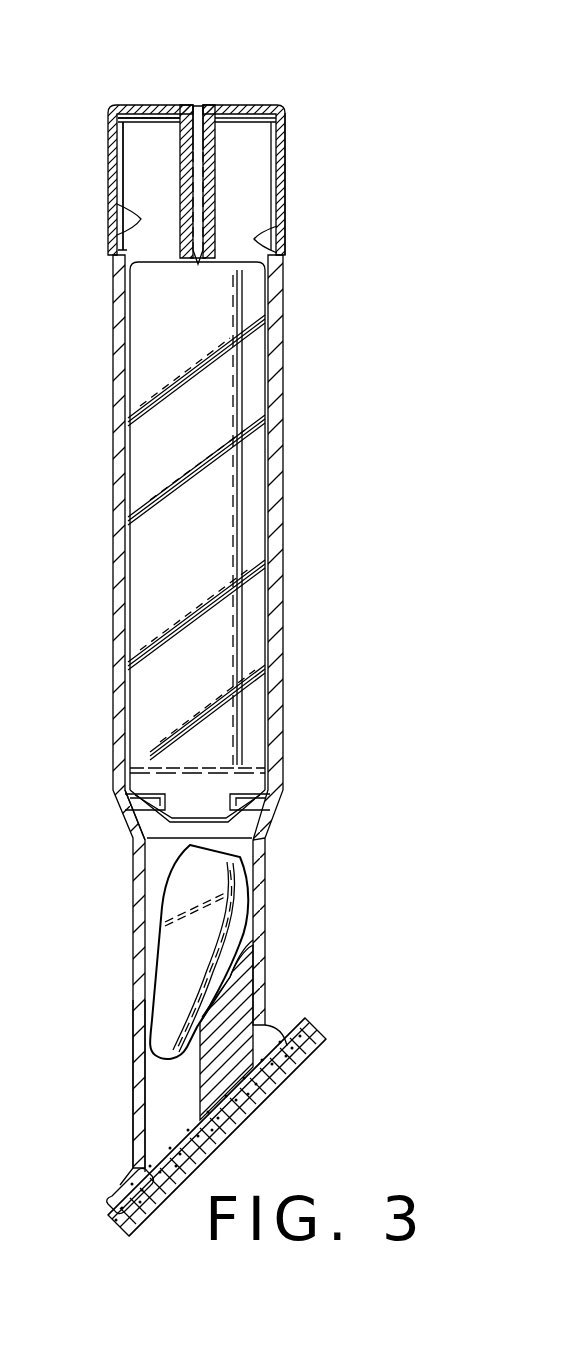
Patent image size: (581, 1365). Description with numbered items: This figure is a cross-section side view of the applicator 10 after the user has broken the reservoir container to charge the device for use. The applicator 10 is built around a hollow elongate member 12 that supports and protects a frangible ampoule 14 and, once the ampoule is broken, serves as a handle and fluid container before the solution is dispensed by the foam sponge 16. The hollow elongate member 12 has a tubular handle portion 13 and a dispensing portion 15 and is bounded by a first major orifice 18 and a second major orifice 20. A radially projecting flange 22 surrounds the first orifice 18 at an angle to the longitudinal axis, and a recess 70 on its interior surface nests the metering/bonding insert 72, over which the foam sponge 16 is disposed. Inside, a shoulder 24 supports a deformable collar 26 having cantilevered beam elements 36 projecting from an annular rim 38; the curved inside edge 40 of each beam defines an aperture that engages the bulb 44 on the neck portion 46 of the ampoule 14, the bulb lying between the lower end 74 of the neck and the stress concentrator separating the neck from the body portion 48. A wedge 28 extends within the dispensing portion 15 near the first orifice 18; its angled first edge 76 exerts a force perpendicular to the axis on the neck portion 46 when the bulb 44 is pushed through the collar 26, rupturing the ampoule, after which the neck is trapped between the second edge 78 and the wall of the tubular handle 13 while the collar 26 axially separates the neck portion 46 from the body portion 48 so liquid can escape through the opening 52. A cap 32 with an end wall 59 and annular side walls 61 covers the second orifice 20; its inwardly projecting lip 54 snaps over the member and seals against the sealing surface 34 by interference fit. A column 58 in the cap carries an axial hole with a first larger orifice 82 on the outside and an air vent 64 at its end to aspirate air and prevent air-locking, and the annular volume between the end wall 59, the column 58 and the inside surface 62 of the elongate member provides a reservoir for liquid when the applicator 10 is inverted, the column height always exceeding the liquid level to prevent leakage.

The applicator 10 is at (324, 567).
The hollow elongate member 12 is at (201, 720).
The tubular handle portion 13 is at (113, 418).
The frangible ampoule 14 is at (202, 568).
The dispensing portion 15 is at (135, 966).
The foam sponge 16 is at (191, 1147).
The first major orifice 18 is at (302, 1058).
The second major orifice 20 is at (207, 168).
The flange 22 is at (132, 1192).
The shoulder 24 is at (150, 828).
The collar 26 is at (128, 796).
The wedge 28 is at (245, 1022).
The cap 32 is at (288, 133).
The sealing surface 34 is at (283, 182).
The cantilevered beam elements 36 is at (258, 820).
The annular rim 38 is at (270, 798).
The inside edge 40 is at (170, 800).
The bulb 44 is at (195, 974).
The neck portion 46 is at (168, 982).
The body portion 48 is at (258, 463).
The opening 52 is at (133, 847).
The lip 54 is at (118, 215).
The column 58 is at (180, 165).
The end wall 59 is at (232, 105).
The annular side walls 61 is at (288, 158).
The inside surface 62 is at (283, 235).
The air vent 64 is at (205, 264).
The recess 70 is at (165, 1208).
The metering/bonding insert 72 is at (164, 1143).
The lower end 74 is at (170, 1078).
The first edge 76 is at (258, 937).
The second edge 78 is at (176, 1088).
The first larger orifice 82 is at (193, 107).